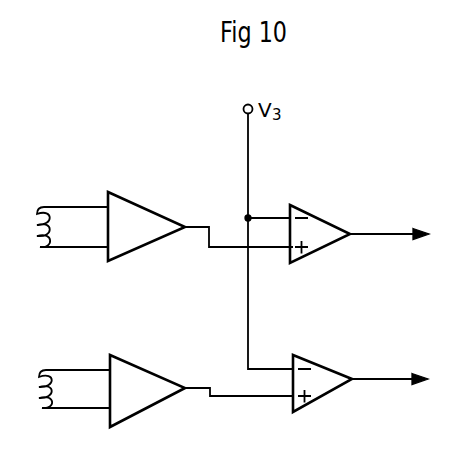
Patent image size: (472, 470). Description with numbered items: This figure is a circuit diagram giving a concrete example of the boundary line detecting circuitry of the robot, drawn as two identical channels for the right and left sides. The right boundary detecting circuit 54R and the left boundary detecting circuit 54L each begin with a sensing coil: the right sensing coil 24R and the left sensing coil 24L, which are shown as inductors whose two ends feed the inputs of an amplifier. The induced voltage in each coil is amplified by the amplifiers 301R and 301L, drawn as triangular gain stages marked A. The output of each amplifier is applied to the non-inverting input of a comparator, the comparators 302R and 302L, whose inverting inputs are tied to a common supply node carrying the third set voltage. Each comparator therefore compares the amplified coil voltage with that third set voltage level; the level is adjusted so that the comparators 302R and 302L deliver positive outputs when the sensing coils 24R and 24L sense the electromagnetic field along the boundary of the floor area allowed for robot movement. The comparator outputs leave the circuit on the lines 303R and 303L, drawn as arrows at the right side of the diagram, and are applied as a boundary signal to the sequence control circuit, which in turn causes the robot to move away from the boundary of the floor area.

The boundary detecting circuit 54R is at (143, 155).
The sensing coil 24R is at (38, 249).
The amplifier 301R is at (143, 203).
The comparator 302R is at (324, 216).
The line 303R is at (382, 232).
The boundary detecting circuit 54L is at (147, 335).
The sensing coil 24L is at (53, 412).
The amplifier 301L is at (152, 368).
The comparator 302L is at (325, 399).
The line 303L is at (383, 377).